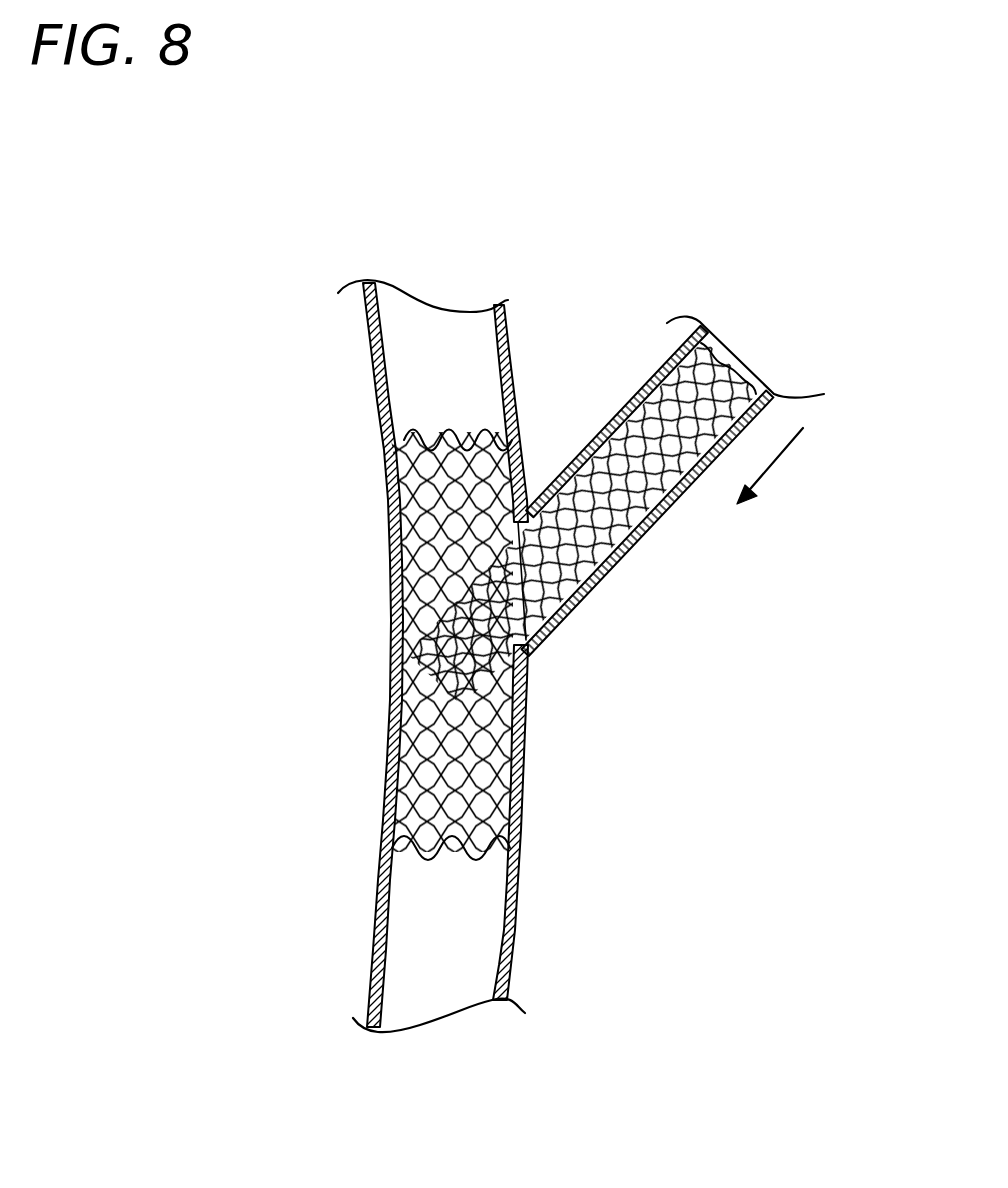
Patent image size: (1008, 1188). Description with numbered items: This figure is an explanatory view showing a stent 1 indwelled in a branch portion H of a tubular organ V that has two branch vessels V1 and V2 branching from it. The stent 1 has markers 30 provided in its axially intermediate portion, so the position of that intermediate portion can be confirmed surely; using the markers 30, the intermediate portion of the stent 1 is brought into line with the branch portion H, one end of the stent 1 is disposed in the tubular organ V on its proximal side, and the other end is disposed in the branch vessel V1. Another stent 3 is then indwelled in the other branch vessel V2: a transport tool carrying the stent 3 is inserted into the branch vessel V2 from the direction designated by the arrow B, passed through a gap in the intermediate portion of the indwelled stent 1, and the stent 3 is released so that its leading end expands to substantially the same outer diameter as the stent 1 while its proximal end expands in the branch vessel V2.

The stent 1 is at (480, 415).
The stent 3 is at (744, 374).
The markers 30 is at (400, 630).
The tubular organ V is at (510, 937).
The branch vessel V1 is at (383, 403).
The branch vessel V2 is at (660, 530).
The branch portion H is at (500, 633).
The arrow B is at (783, 460).